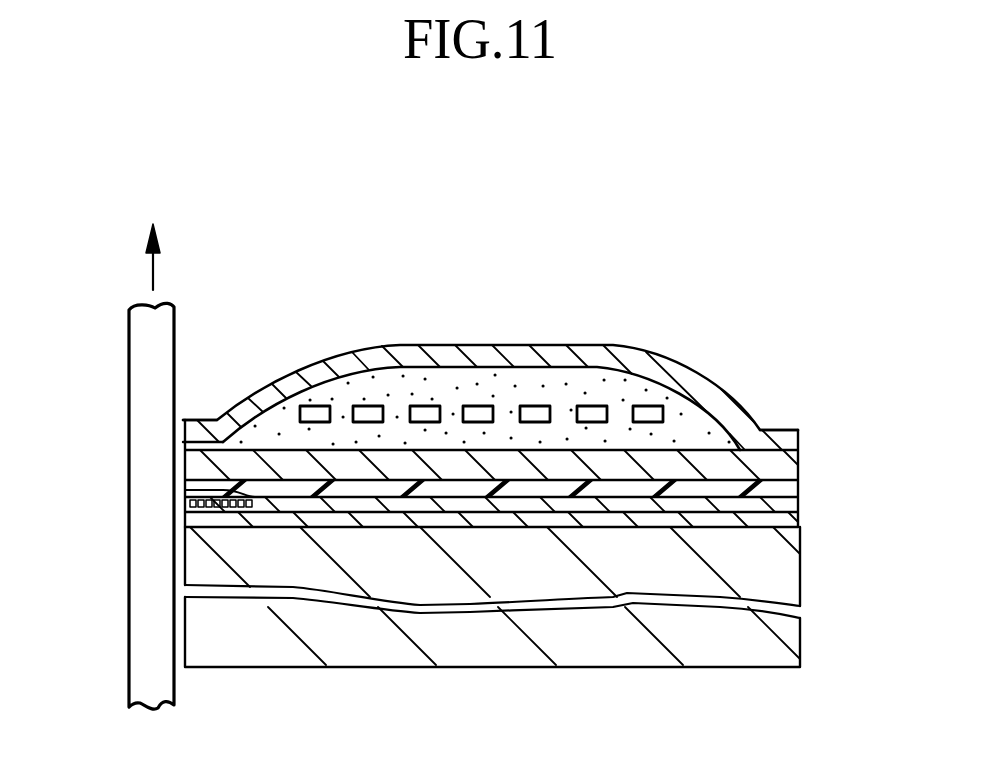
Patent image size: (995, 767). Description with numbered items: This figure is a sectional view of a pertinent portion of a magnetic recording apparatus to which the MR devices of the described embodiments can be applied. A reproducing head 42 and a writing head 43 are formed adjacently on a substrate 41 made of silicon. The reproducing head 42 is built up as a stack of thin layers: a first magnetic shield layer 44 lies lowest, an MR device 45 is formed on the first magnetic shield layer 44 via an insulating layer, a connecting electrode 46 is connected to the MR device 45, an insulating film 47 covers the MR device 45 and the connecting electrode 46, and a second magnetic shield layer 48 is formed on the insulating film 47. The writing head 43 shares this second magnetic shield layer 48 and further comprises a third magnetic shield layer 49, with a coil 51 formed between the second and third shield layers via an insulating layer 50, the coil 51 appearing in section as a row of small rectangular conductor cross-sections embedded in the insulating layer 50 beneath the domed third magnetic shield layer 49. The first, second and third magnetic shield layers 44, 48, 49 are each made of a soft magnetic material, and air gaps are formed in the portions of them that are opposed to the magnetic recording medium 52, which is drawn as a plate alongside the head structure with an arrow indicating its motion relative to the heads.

The substrate 41 is at (790, 588).
The reproducing head 42 is at (820, 460).
The writing head 43 is at (820, 350).
The first magnetic shield layer 44 is at (497, 517).
The MR device 45 is at (221, 502).
The connecting electrode 46 is at (353, 497).
The insulating film 47 is at (654, 487).
The second magnetic shield layer 48 is at (768, 463).
The third magnetic shield layer 49 is at (700, 383).
The insulating layer 50 is at (397, 382).
The coil 51 is at (480, 410).
The magnetic recording medium 52 is at (145, 622).